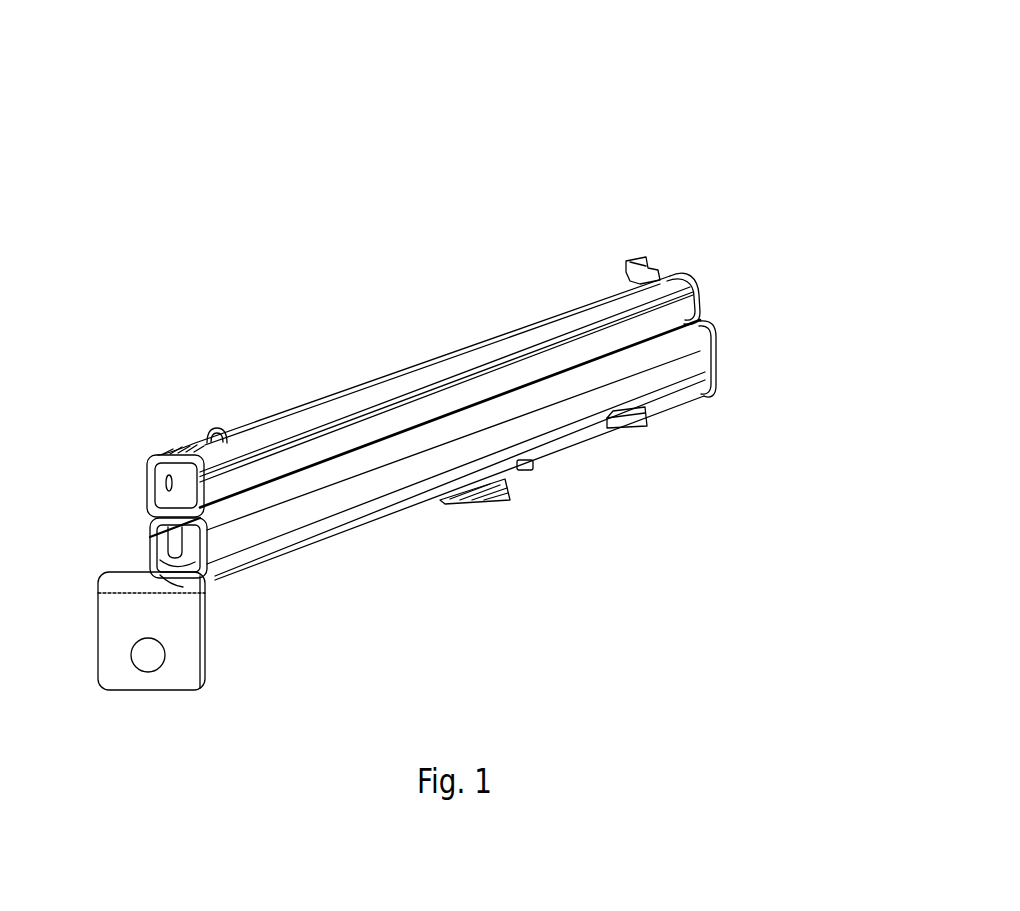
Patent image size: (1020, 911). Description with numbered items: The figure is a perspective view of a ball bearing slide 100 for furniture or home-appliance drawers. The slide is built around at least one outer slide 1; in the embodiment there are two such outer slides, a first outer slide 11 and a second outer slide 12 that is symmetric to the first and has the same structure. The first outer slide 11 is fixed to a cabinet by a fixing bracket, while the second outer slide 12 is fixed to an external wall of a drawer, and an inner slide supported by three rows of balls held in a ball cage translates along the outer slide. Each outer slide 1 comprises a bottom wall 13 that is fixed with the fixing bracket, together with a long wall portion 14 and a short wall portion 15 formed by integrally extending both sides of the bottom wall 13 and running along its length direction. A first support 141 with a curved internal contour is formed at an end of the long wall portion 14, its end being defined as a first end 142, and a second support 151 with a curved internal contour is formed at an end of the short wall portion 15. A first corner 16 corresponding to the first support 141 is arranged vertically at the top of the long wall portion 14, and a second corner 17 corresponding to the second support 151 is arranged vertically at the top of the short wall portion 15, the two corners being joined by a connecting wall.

The ball bearing slide 100 is at (517, 172).
The outer slide 1 is at (803, 236).
The first outer slide 11 is at (678, 382).
The second outer slide 12 is at (690, 286).
The bottom wall 13 is at (165, 577).
The long wall portion 14 is at (260, 528).
The first support 141 is at (150, 513).
The first end 142 is at (150, 500).
The short wall portion 15 is at (156, 554).
The second support 151 is at (194, 458).
The first corner 16 is at (265, 558).
The second corner 17 is at (160, 575).